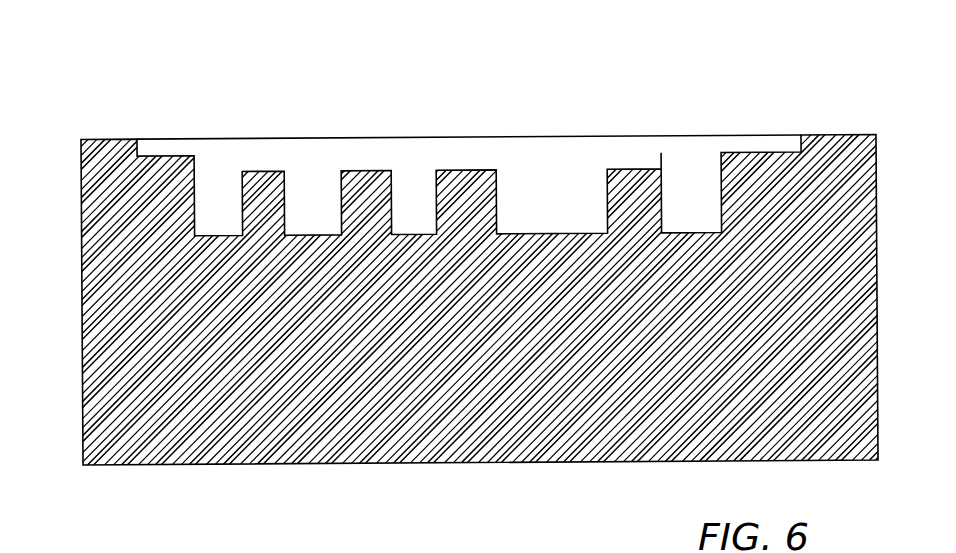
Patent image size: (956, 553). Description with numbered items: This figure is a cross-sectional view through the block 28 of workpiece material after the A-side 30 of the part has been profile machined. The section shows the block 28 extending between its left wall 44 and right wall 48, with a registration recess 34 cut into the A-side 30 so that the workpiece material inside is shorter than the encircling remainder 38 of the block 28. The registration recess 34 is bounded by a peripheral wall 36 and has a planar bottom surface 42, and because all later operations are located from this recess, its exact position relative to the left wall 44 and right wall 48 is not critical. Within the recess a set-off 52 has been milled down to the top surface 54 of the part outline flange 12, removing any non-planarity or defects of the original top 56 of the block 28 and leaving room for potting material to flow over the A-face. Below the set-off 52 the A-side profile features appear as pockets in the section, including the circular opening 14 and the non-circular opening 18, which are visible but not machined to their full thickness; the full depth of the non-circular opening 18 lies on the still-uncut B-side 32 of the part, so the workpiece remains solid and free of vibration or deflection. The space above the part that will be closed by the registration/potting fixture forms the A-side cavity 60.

The A-side 30 is at (368, 82).
The registration recess 34 is at (178, 147).
The peripheral wall 36 is at (152, 140).
The part outline flange 12 is at (262, 196).
The set-off 52 is at (312, 162).
The circular opening 14 is at (405, 187).
The A-side cavity 60 is at (428, 145).
The non-circular opening 18 is at (568, 192).
The top surface 54 is at (632, 168).
The planar bottom surface 42 is at (797, 190).
The encircling remainder 38 is at (800, 198).
The top 56 is at (855, 135).
The left wall 44 is at (83, 368).
The right wall 48 is at (877, 428).
The B-side 32 is at (418, 494).
The block 28 is at (495, 478).